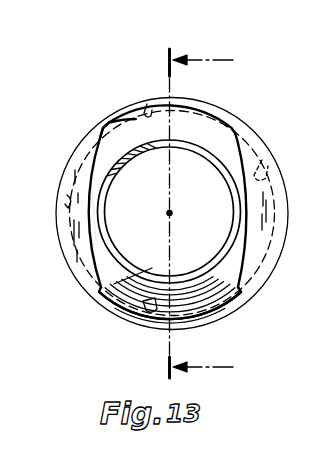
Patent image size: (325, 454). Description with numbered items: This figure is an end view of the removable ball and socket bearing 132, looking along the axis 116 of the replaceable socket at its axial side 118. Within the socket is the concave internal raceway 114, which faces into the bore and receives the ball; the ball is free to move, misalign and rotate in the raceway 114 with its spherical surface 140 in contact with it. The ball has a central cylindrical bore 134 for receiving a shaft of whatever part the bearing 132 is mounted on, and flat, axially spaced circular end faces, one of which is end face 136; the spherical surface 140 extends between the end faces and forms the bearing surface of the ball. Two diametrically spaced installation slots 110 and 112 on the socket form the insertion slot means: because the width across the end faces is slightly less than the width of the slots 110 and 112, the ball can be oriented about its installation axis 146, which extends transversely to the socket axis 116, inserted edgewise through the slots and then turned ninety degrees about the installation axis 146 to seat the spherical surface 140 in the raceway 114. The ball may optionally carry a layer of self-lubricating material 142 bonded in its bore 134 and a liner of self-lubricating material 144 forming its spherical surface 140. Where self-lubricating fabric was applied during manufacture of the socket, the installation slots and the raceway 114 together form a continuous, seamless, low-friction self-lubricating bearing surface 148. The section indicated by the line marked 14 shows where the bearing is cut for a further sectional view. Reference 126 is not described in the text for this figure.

The section line 14- 14 is at (271, 72).
The installation slot 110 is at (147, 104).
The installation slot 112 is at (147, 304).
The concave internal raceway 114 is at (62, 206).
The axis 116 is at (172, 213).
The axial side 118 is at (212, 109).
The annular space 126 is at (108, 178).
The removable ball and socket bearing 132 is at (283, 88).
The central cylindrical bore 134 is at (142, 252).
The circular end face 136 is at (199, 150).
The spherical surface 140 is at (62, 167).
The layer of self-lubricating material 142 is at (228, 247).
The liner of self-lubricating material 144 is at (120, 124).
The installation axis 146 is at (167, 56).
The self-lubricating bearing surface 148 is at (259, 166).